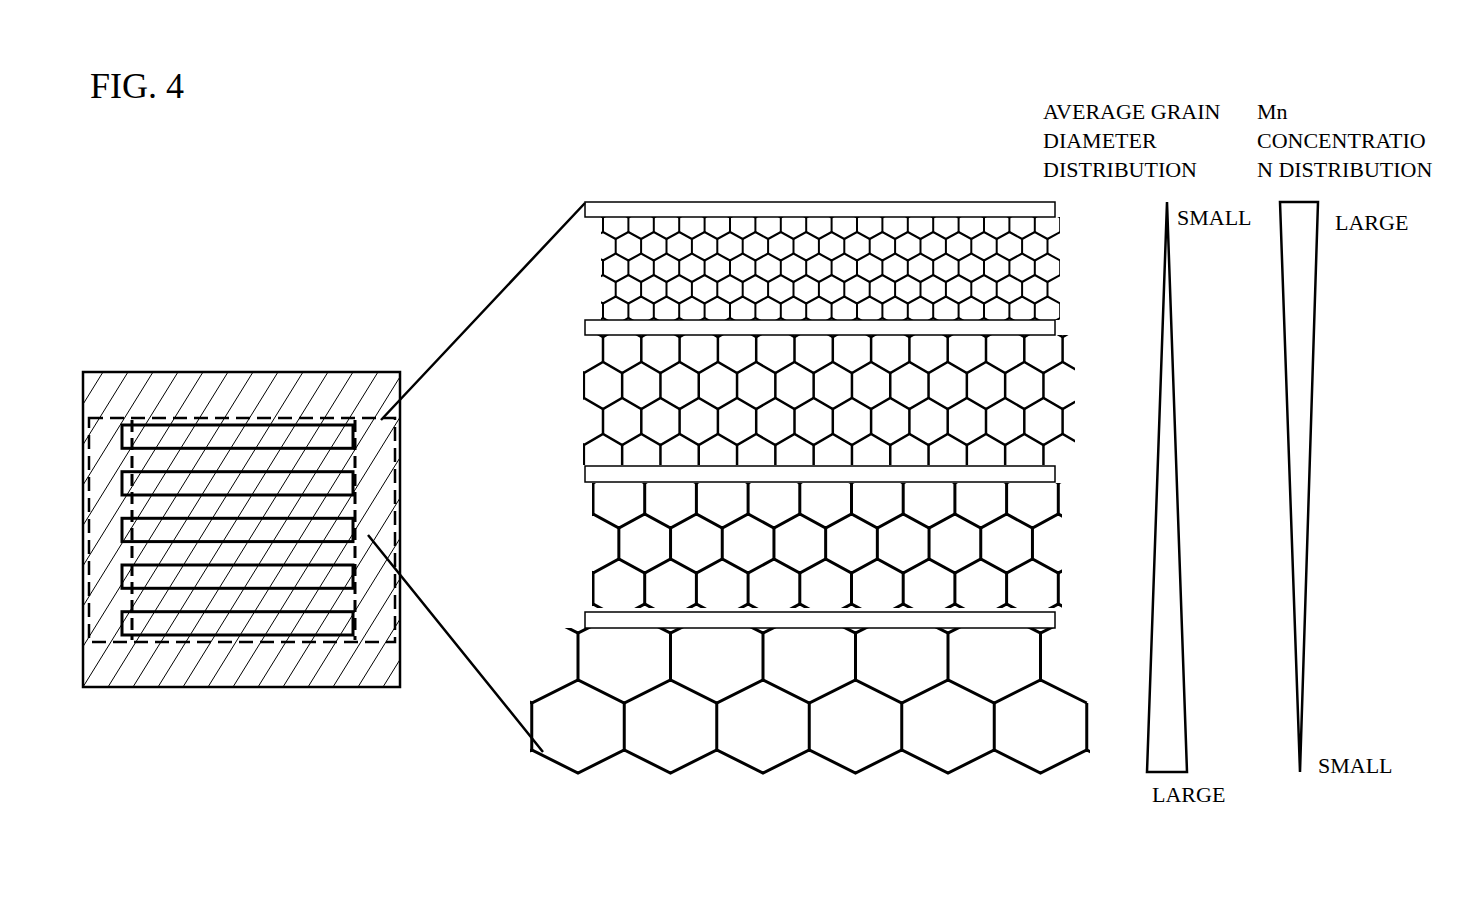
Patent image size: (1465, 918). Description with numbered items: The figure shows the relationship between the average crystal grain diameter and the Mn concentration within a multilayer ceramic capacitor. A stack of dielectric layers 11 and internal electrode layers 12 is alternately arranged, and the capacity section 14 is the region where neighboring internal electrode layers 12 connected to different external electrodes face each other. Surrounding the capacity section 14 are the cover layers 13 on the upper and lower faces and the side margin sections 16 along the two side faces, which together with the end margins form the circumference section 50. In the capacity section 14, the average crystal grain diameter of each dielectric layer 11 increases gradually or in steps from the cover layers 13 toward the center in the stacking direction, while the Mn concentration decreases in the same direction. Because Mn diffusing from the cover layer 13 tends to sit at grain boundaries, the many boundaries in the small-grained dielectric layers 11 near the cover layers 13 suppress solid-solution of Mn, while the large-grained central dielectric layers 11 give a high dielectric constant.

The circumference section 50 is at (393, 273).
The dielectric layer 11 is at (333, 627).
The internal electrode layer 12 is at (203, 567).
The cover layer 13 is at (217, 387).
The capacity section 14 is at (265, 643).
The side margin section 16 is at (110, 417).